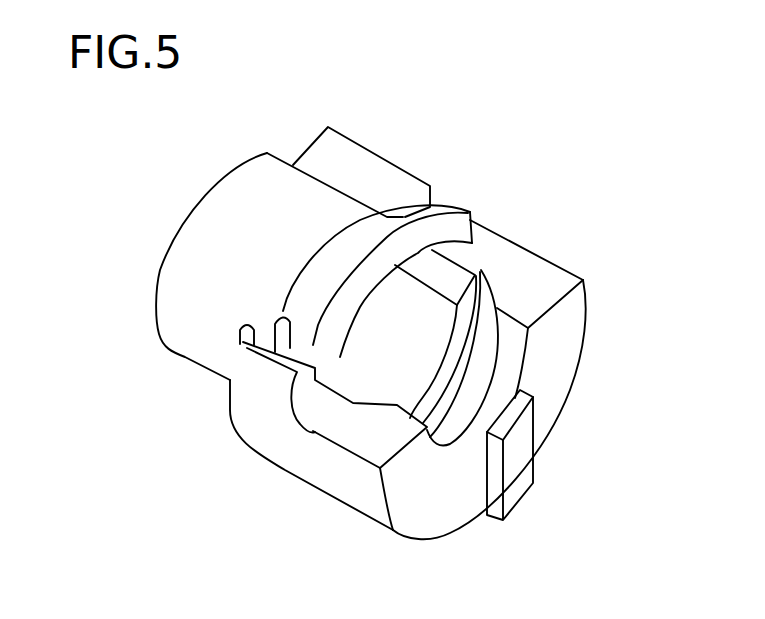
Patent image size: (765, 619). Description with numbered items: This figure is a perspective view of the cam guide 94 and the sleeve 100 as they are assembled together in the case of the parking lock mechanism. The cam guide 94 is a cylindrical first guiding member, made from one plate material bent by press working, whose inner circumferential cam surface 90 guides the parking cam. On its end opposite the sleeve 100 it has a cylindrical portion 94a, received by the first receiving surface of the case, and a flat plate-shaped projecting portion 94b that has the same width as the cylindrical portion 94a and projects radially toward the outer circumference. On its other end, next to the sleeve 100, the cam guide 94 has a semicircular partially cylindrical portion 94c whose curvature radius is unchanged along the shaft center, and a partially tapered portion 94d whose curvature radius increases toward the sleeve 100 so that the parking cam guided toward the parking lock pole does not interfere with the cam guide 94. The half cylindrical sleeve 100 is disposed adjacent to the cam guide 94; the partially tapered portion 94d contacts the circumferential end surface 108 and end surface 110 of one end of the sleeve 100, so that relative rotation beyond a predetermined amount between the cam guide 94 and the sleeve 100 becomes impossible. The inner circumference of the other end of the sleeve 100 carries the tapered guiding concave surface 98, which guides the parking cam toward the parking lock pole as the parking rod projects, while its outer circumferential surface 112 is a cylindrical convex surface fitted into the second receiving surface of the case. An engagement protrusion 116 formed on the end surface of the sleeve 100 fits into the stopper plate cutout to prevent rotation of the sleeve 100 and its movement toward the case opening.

The sleeve 100 is at (588, 330).
The cam guide 94 is at (255, 152).
The cylindrical portion 94a is at (227, 196).
The projecting portion 94b is at (356, 163).
The partially cylindrical portion 94c is at (461, 217).
The partially tapered portion 94d is at (456, 286).
The end surface 110 is at (542, 282).
The end surface 108 is at (246, 326).
The outer circumferential surface 112 is at (273, 446).
The engagement protrusion 116 is at (517, 457).
The inner circumferential cam surface 90 is at (332, 375).
The tapered guiding concave surface 98 is at (392, 372).